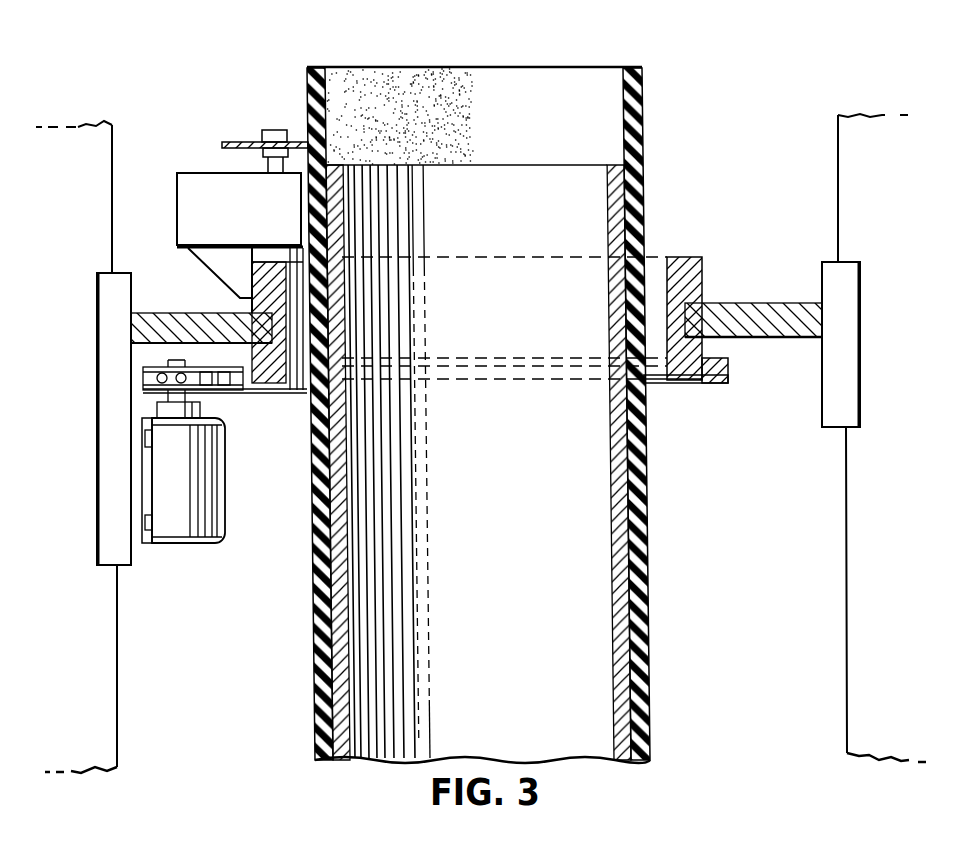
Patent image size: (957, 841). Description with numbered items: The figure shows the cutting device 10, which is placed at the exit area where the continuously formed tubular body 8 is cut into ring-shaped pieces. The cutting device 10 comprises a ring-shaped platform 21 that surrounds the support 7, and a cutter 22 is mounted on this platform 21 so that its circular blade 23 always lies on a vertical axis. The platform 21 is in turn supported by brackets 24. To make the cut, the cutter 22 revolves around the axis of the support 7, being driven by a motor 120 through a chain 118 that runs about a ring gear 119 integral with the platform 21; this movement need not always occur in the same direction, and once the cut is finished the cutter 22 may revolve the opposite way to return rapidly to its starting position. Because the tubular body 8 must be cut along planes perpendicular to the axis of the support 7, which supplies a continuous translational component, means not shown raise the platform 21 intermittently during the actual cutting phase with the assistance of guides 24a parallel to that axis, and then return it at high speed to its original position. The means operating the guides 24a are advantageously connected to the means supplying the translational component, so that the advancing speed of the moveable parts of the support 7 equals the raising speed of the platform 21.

The support 7 is at (595, 627).
The tubular body 8 is at (642, 93).
The cutting device 10 is at (203, 166).
The ring-shaped platform 21 is at (681, 256).
The cutter 22 is at (197, 205).
The circular blade 23 is at (241, 142).
The brackets 24 is at (200, 314).
The guides 24a is at (125, 567).
The chain 118 is at (230, 392).
The ring gear 119 is at (728, 367).
The motor 120 is at (212, 540).